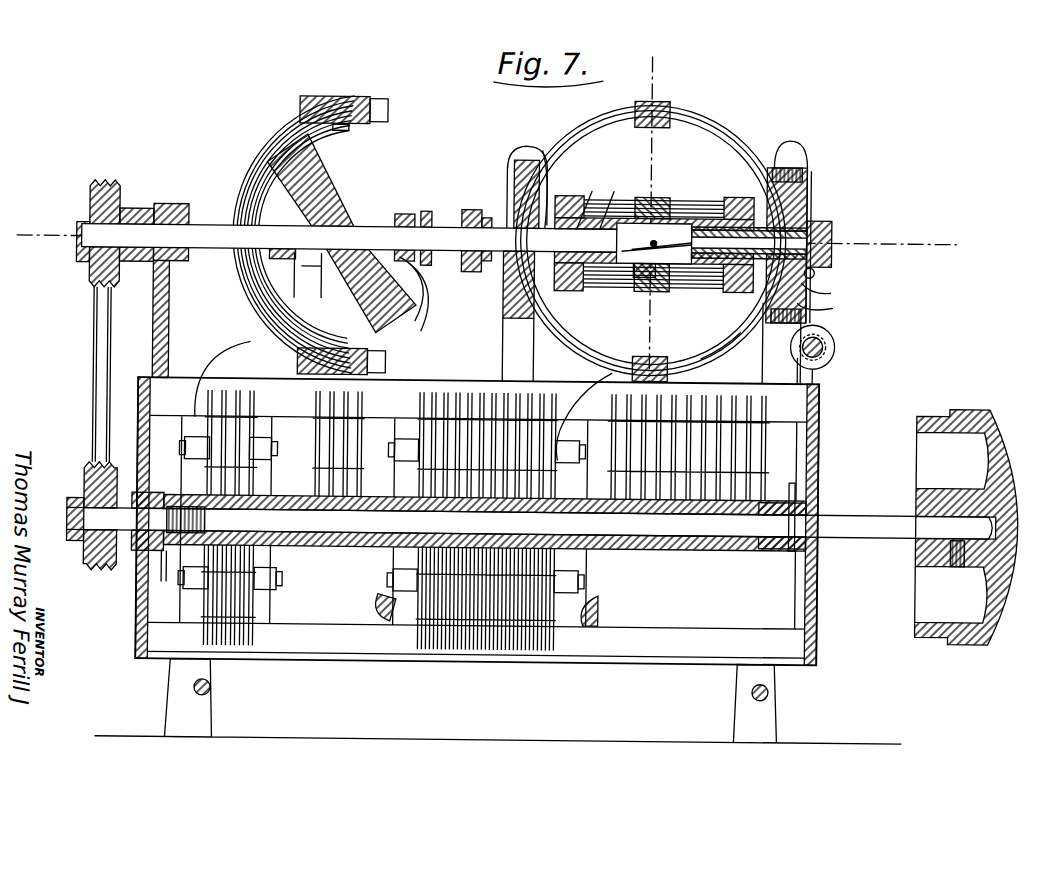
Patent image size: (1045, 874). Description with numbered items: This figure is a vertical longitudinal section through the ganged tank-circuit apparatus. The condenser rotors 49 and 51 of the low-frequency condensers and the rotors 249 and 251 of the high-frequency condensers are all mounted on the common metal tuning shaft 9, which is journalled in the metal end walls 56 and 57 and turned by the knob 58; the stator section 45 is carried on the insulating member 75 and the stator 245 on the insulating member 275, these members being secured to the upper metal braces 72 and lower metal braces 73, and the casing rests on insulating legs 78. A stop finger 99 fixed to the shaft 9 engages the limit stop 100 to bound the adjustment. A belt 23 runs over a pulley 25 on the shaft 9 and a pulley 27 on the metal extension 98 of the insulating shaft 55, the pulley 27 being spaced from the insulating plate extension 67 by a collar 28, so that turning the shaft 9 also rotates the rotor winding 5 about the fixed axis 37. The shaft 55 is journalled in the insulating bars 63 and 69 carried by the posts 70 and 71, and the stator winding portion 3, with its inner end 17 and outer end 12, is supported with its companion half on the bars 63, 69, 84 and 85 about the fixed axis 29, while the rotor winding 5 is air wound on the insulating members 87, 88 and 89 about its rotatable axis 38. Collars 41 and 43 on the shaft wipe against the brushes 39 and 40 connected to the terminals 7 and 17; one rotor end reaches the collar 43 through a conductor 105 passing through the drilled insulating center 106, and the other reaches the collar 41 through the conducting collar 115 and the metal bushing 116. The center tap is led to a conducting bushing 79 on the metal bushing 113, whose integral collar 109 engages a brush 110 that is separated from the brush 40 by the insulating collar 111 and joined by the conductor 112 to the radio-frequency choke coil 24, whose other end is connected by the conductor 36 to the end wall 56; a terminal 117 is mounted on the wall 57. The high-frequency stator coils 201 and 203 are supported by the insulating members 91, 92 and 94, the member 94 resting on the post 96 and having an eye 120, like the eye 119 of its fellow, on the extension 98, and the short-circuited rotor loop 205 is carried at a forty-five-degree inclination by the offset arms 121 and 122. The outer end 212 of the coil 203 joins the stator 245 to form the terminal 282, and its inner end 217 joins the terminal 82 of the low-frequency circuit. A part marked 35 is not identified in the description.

The stator inductor-winding portion 3 is at (690, 215).
The rotor winding 5 is at (620, 198).
The inner end terminal 7 is at (530, 155).
The rotor metal tuning shaft 9 is at (875, 536).
The outer end conductor 12 is at (562, 426).
The inner end terminal 17 is at (798, 140).
The belt 23 is at (92, 360).
The radio-frequency choke coil 24 is at (830, 334).
The pulley 25 is at (96, 576).
The pulley 27 is at (92, 292).
The bushing or collar 28 is at (140, 268).
The fixed axis 29 is at (652, 62).
The outer ring 35 is at (706, 125).
The conductor 36 is at (815, 376).
The fixed axis 37 is at (22, 232).
The rotatable axis 38 is at (630, 252).
The brush or wiping blade 39 is at (512, 155).
The brush or wiping blade 40 is at (812, 205).
The collar or bushing 41 is at (512, 246).
The collar or bushing 43 is at (828, 222).
The stationary-condenser plate section 45 is at (472, 420).
The rotary-condenser plate section 49 is at (410, 652).
The rotary-condenser plate section 51 is at (766, 438).
The insulating shaft 55 is at (652, 242).
The metal end wall 56 is at (819, 588).
The metal end wall 57 is at (138, 650).
The knob 58 is at (988, 636).
The insulating bar 63 is at (790, 315).
The insulating plate extension 67 is at (152, 342).
The insulating bar 69 is at (540, 150).
The insulating pillars or posts 70 is at (762, 370).
The insulating pillars or posts 71 is at (500, 330).
The upper metal braces 72 is at (568, 382).
The lower metal braces 73 is at (348, 664).
The insulating member 75 is at (432, 380).
The insulating legs 78 is at (175, 706).
The conducting bushing 79 is at (738, 140).
The tank-circuit terminal 82 is at (566, 440).
The insulating bar 84 is at (660, 100).
The insulating bar 85 is at (650, 356).
The insulating member 87 is at (570, 196).
The insulating member 88 is at (652, 196).
The insulating member 89 is at (740, 160).
The insulating member 91 is at (330, 98).
The insulating member 92 is at (372, 364).
The insulating member 94 is at (286, 262).
The insulating post 96 is at (290, 290).
The metal extension of shaft 98 is at (376, 236).
The stop finger 99 is at (798, 482).
The limit stop 100 is at (772, 548).
The conductor 105 is at (644, 278).
The drilled insulating center 106 is at (722, 258).
The integral collar 109 is at (812, 180).
The brush or wiping blade 110 is at (830, 290).
The insulating collar 111 is at (814, 270).
The conductor 112 is at (830, 303).
The metal bushing 113 is at (715, 215).
The conducting collar 115 is at (612, 190).
The metal bushing 116 is at (590, 190).
The terminal 117 is at (164, 590).
The eye end 119 is at (466, 208).
The eye end 120 is at (172, 205).
The offset arm 121 is at (232, 150).
The offset arm 122 is at (420, 290).
The inductor-winding portion 201 is at (212, 185).
The inductor-winding portion 203 is at (320, 140).
The rotor winding loop 205 is at (322, 200).
The outer end conductor 212 is at (200, 395).
The inner end conductor 217 is at (385, 326).
The split-stator condenser section 245 is at (254, 402).
The condenser rotor 249 is at (258, 642).
The condenser rotor 251 is at (318, 440).
The insulating member 275 is at (190, 600).
The tank-circuit terminal 282 is at (184, 452).